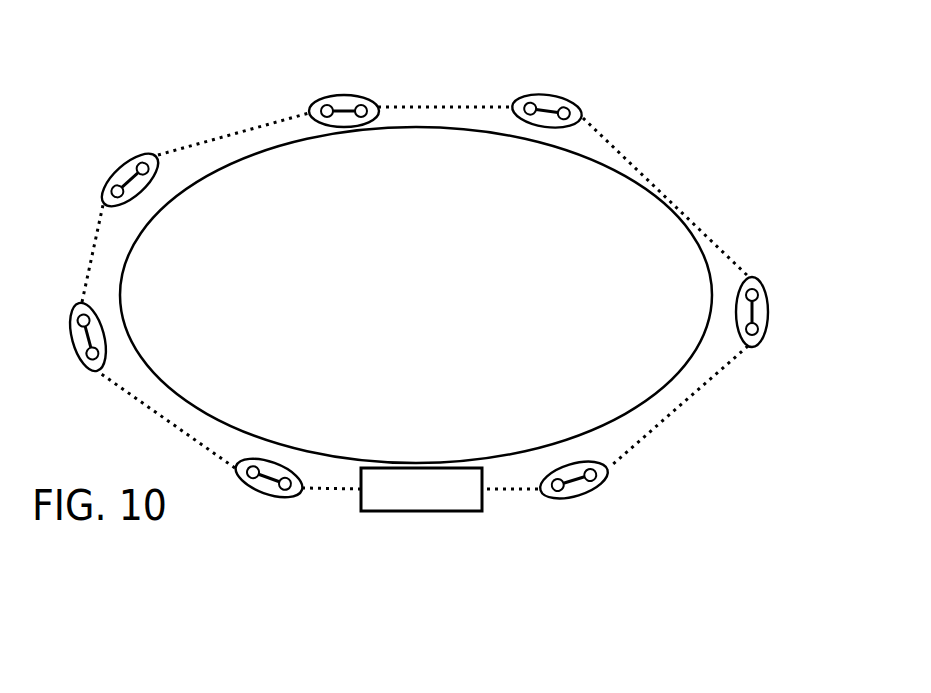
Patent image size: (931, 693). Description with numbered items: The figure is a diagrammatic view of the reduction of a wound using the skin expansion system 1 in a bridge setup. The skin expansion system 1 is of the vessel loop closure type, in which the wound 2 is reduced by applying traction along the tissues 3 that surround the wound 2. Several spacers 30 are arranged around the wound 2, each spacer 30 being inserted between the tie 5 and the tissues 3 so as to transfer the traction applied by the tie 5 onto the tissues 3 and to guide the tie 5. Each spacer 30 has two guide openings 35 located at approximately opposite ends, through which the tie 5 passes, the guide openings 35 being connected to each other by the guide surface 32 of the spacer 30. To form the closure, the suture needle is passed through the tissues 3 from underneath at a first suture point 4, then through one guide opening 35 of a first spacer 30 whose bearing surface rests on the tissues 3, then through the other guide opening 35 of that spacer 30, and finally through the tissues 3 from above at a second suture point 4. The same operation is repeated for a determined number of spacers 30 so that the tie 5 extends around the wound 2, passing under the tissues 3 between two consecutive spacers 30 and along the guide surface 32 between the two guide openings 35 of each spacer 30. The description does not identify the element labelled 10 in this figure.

The skin expansion system 1 is at (450, 317).
The wound 2 is at (549, 251).
The tissues 3 is at (594, 136).
The suture point 4 is at (112, 182).
The tie 5 is at (350, 97).
The control unit 10 is at (454, 513).
The spacer 30 is at (545, 92).
The guide surface 32 is at (337, 96).
The guide openings 35 is at (140, 167).